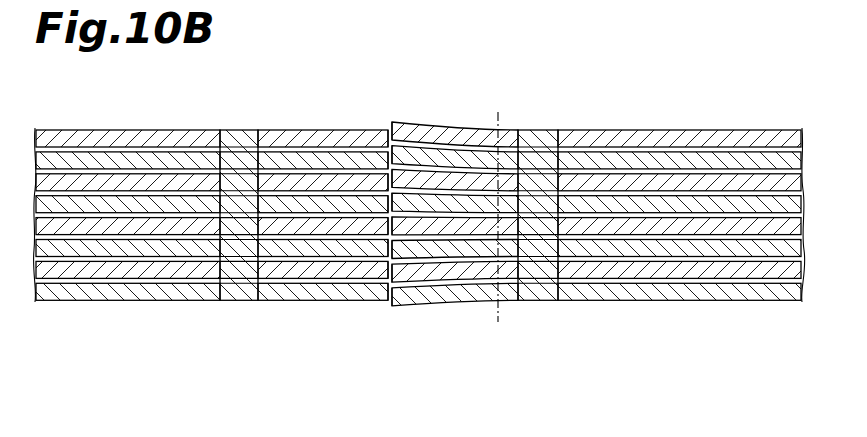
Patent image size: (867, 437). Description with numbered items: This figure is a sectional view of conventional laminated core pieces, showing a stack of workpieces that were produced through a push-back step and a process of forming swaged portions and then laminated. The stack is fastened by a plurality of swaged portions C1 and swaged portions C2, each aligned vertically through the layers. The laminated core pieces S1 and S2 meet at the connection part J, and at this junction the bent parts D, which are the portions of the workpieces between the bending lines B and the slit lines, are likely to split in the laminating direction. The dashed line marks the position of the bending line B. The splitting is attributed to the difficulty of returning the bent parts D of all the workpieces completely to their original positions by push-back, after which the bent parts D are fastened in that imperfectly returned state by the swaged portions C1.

The laminated core piece S2 is at (163, 320).
The laminated core piece S1 is at (679, 320).
The swaged portion C2 is at (222, 138).
The swaged portion C1 is at (530, 135).
The bent part D is at (437, 126).
The bending line B is at (498, 128).
The connection part J is at (389, 320).